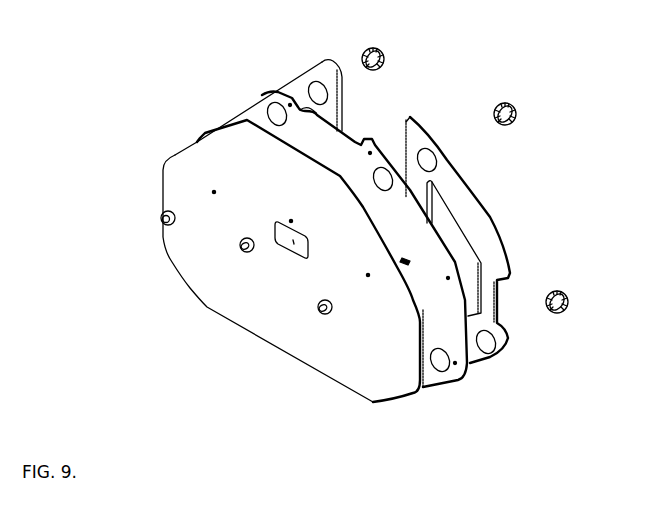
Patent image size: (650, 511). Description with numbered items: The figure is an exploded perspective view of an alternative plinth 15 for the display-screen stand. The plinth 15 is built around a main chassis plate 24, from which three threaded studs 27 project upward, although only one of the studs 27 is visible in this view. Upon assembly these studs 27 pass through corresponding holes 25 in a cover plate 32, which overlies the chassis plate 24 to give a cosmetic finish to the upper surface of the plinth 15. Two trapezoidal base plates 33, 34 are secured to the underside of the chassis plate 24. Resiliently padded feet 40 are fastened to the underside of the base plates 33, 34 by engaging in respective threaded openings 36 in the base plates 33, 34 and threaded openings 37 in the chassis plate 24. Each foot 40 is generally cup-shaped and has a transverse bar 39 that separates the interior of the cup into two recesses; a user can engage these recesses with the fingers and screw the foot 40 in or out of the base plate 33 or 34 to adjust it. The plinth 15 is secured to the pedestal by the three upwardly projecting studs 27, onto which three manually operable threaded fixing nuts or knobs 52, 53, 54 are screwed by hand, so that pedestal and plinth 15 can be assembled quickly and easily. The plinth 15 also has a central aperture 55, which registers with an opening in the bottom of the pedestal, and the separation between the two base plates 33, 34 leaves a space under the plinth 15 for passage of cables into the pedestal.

The plinth 15 is at (208, 105).
The main chassis plate 24 is at (260, 112).
The holes 25 is at (216, 192).
The threaded studs 27 is at (403, 259).
The cover plate 32 is at (180, 158).
The base plate 33 is at (307, 83).
The base plate 34 is at (463, 218).
The threaded openings 36 is at (328, 99).
The threaded openings 37 is at (280, 126).
The transverse bar 39 is at (362, 56).
The resiliently padded feet 40 is at (381, 48).
The threaded fixing nut or knob 52 is at (163, 216).
The threaded fixing nut or knob 53 is at (240, 247).
The threaded fixing nut or knob 54 is at (316, 316).
The central aperture 55 is at (293, 254).